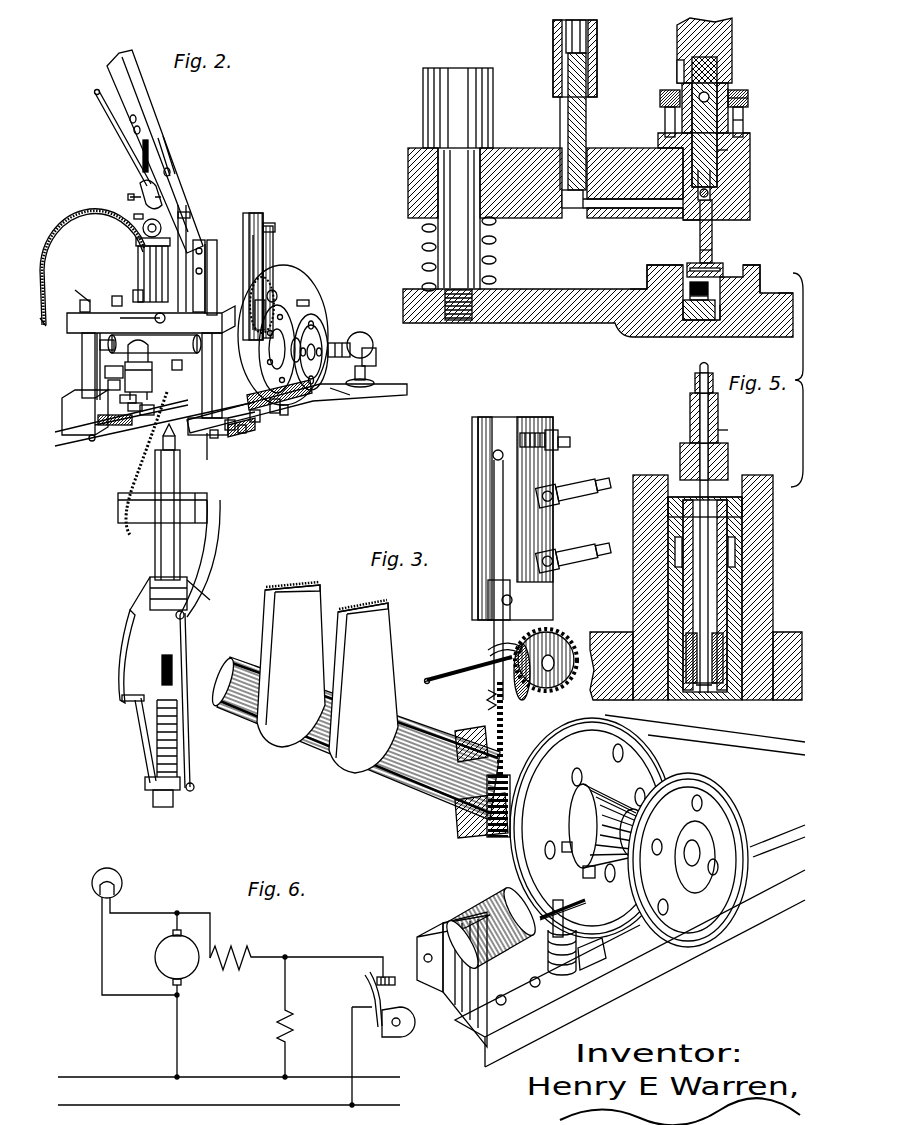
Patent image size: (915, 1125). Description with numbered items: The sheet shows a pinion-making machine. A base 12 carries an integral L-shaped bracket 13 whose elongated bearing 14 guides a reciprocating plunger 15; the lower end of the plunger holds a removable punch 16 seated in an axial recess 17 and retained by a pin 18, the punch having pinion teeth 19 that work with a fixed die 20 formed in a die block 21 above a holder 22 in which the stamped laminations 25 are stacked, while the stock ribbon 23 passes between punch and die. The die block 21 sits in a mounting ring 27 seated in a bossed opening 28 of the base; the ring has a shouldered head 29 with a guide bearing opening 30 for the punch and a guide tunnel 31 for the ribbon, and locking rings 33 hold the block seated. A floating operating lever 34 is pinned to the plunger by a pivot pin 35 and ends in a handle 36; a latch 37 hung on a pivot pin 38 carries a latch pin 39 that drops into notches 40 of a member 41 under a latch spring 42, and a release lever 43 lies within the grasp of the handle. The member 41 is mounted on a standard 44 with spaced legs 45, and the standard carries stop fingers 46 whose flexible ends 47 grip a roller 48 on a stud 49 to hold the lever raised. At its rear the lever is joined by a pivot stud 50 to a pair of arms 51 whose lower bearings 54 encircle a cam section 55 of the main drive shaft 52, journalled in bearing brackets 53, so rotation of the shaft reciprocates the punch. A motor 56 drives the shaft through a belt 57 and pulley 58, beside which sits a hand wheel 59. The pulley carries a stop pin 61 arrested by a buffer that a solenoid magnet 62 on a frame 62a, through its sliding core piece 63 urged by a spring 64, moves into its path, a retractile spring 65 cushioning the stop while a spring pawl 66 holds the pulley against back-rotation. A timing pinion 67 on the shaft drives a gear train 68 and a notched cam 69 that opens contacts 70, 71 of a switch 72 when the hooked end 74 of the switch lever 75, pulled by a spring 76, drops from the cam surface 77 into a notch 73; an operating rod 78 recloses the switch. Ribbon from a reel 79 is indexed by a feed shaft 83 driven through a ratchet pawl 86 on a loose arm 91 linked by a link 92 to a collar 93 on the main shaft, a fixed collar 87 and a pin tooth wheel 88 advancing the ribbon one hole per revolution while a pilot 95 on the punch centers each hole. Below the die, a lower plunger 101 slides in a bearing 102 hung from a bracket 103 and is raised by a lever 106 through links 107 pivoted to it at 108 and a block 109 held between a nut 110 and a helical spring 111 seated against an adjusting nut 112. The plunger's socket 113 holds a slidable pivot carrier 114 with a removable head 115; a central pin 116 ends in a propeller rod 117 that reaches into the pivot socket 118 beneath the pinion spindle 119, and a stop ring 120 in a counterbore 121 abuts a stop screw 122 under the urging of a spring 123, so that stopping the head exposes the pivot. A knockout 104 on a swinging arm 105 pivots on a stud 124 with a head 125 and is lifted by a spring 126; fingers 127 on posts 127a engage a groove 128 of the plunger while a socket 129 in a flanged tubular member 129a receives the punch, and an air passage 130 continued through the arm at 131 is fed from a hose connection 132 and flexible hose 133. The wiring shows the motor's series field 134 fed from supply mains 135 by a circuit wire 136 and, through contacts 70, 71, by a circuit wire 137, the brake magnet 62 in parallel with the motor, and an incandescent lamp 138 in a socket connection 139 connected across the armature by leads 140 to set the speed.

In FIG. 2, the base 12 is at (325, 402).
In FIG. 3, the base 12 is at (572, 1008).
In FIG. 5, the base 12 is at (578, 321).
In FIG. 2, the L-shaped bracket 13 is at (207, 276).
In FIG. 2, the bearing 14 is at (206, 262).
In FIG. 2, the plunger 15 is at (82, 335).
In FIG. 5, the plunger 15 is at (733, 40).
In FIG. 2, the punch 16 is at (118, 428).
In FIG. 5, the punch 16 is at (730, 66).
In FIG. 5, the axial recess 17 is at (680, 66).
In FIG. 5, the removable pin 18 is at (700, 100).
In FIG. 5, the pinion teeth 19 is at (720, 160).
In FIG. 5, the fixed die 20 is at (689, 265).
In FIG. 5, the die block 21 is at (757, 266).
In FIG. 5, the holder 22 is at (700, 322).
In FIG. 2, the ribbon 23 is at (127, 525).
In FIG. 5, the ribbon 23 is at (716, 272).
In FIG. 5, the laminations 25 is at (650, 282).
In FIG. 5, the mounting ring 27 is at (736, 325).
In FIG. 5, the bossed opening 28 is at (628, 289).
In FIG. 2, the shouldered head 29 is at (161, 434).
In FIG. 5, the shouldered head 29 is at (766, 272).
In FIG. 5, the guide bearing opening 30 is at (713, 263).
In FIG. 2, the guide tunnel 31 is at (142, 415).
In FIG. 5, the threaded locking rings 33 is at (690, 312).
In FIG. 2, the floating operating lever 34 is at (160, 138).
In FIG. 2, the pivot pin 35 is at (190, 215).
In FIG. 2, the handle 36 is at (107, 72).
In FIG. 2, the latch 37 is at (142, 184).
In FIG. 2, the pivot pin 38 is at (171, 171).
In FIG. 2, the latch pin 39 is at (130, 197).
In FIG. 2, the notches 40 is at (133, 296).
In FIG. 2, the latch member 41 is at (113, 300).
In FIG. 2, the latch spring 42 is at (149, 150).
In FIG. 2, the latch release lever 43 is at (117, 133).
In FIG. 2, the standard 44 is at (151, 319).
In FIG. 2, the legs 45 is at (244, 432).
In FIG. 2, the stop fingers 46 is at (140, 260).
In FIG. 2, the flexible ends 47 is at (140, 242).
In FIG. 2, the roller 48 is at (150, 224).
In FIG. 2, the stud 49 is at (144, 226).
In FIG. 2, the pivot stud 50 is at (193, 262).
In FIG. 2, the driving arms 51 is at (212, 290).
In FIG. 3, the driving arms 51 is at (352, 603).
In FIG. 2, the main drive shaft 52 is at (300, 335).
In FIG. 3, the main drive shaft 52 is at (458, 810).
In FIG. 2, the bearing brackets 53 is at (258, 425).
In FIG. 3, the bearing brackets 53 is at (490, 838).
In FIG. 2, the lower end bearings 54 is at (184, 368).
In FIG. 3, the lower end bearings 54 is at (281, 750).
In FIG. 2, the cam section 55 is at (154, 342).
In FIG. 3, the cam section 55 is at (400, 768).
In FIG. 2, the electric motor 56 is at (352, 337).
In FIG. 6, the electric motor 56 is at (193, 968).
In FIG. 2, the belt 57 is at (345, 396).
In FIG. 3, the belt 57 is at (735, 730).
In FIG. 2, the pulley 58 is at (298, 278).
In FIG. 3, the pulley 58 is at (670, 772).
In FIG. 2, the hand wheel 59 is at (314, 330).
In FIG. 3, the hand wheel 59 is at (737, 790).
In FIG. 3, the stop pin 61 is at (578, 880).
In FIG. 2, the solenoid magnet 62 is at (282, 413).
In FIG. 3, the solenoid magnet 62 is at (520, 948).
In FIG. 6, the solenoid magnet 62 is at (292, 1027).
In FIG. 2, the frame 62a is at (283, 415).
In FIG. 3, the sliding core piece 63 is at (423, 942).
In FIG. 3, the spring 64 is at (456, 1000).
In FIG. 3, the retractile spring 65 is at (582, 962).
In FIG. 3, the spring pawl 66 is at (618, 913).
In FIG. 3, the timing pinion 67 is at (545, 910).
In FIG. 2, the timing gear train 68 is at (300, 408).
In FIG. 3, the timing gear train 68 is at (487, 694).
In FIG. 2, the cylindrical notched cam 69 is at (274, 290).
In FIG. 3, the cylindrical notched cam 69 is at (556, 635).
In FIG. 2, the flexible contact 70 is at (268, 220).
In FIG. 3, the flexible contact 70 is at (482, 455).
In FIG. 6, the flexible contact 70 is at (368, 978).
In FIG. 2, the adjustable contact 71 is at (275, 227).
In FIG. 3, the adjustable contact 71 is at (537, 432).
In FIG. 6, the adjustable contact 71 is at (388, 976).
In FIG. 2, the switch 72 is at (249, 222).
In FIG. 3, the switch 72 is at (478, 494).
In FIG. 3, the notches 73 is at (566, 646).
In FIG. 3, the hooked end 74 is at (484, 672).
In FIG. 6, the hooked end 74 is at (370, 1020).
In FIG. 2, the switch lever 75 is at (265, 258).
In FIG. 3, the switch lever 75 is at (488, 606).
In FIG. 2, the spring 76 is at (250, 238).
In FIG. 3, the spring 76 is at (493, 518).
In FIG. 3, the cam surface 77 is at (500, 645).
In FIG. 2, the operating rod 78 is at (150, 318).
In FIG. 3, the operating rod 78 is at (438, 676).
In FIG. 2, the ribbon feed reel 79 is at (277, 293).
In FIG. 2, the ribbon feed shaft 83 is at (230, 430).
In FIG. 2, the ratchet pawl 86 is at (104, 370).
In FIG. 2, the fixed collar 87 is at (149, 377).
In FIG. 2, the pin tooth wheel 88 is at (216, 440).
In FIG. 2, the loose arm 91 is at (100, 360).
In FIG. 2, the link 92 is at (126, 355).
In FIG. 2, the driving collar 93 is at (82, 314).
In FIG. 5, the pilot 95 is at (750, 190).
In FIG. 5, the lower plunger 101 is at (760, 565).
In FIG. 2, the elongated bearing 102 is at (158, 540).
In FIG. 5, the elongated bearing 102 is at (640, 578).
In FIG. 2, the depending bracket 103 is at (210, 511).
In FIG. 5, the depending bracket 103 is at (606, 638).
In FIG. 2, the knockout 104 is at (126, 408).
In FIG. 5, the knockout 104 is at (650, 236).
In FIG. 2, the swinging arm 105 is at (118, 399).
In FIG. 5, the swinging arm 105 is at (546, 205).
In FIG. 2, the lever 106 is at (118, 680).
In FIG. 2, the connecting links 107 is at (138, 732).
In FIG. 2, the pivotal connection 108 is at (185, 615).
In FIG. 2, the block 109 is at (152, 792).
In FIG. 2, the nut 110 is at (160, 807).
In FIG. 2, the helical spring 111 is at (165, 753).
In FIG. 2, the adjusting nut 112 is at (174, 690).
In FIG. 5, the socket 113 is at (728, 622).
In FIG. 2, the pivot carrier 114 is at (160, 452).
In FIG. 5, the pivot carrier 114 is at (729, 462).
In FIG. 2, the shouldered head 115 is at (210, 460).
In FIG. 5, the shouldered head 115 is at (690, 410).
In FIG. 5, the central pin 116 is at (722, 590).
In FIG. 5, the pivot propeller rod 117 is at (709, 415).
In FIG. 5, the pivot socket 118 is at (719, 436).
In FIG. 5, the pinion pivot shaft 119 is at (695, 383).
In FIG. 5, the stop ring 120 is at (735, 530).
In FIG. 5, the counterbore 121 is at (732, 550).
In FIG. 5, the stop screw 122 is at (740, 506).
In FIG. 5, the helical spring 123 is at (724, 652).
In FIG. 5, the pivot stud 124 is at (450, 168).
In FIG. 5, the head 125 is at (428, 110).
In FIG. 2, the helical spring 126 is at (90, 440).
In FIG. 5, the helical spring 126 is at (422, 230).
In FIG. 2, the fingers 127 is at (107, 383).
In FIG. 5, the fingers 127 is at (665, 92).
In FIG. 5, the posts 127a is at (750, 104).
In FIG. 5, the groove 128 is at (745, 118).
In FIG. 5, the socket 129 is at (710, 174).
In FIG. 5, the flanged tubular member 129a is at (752, 138).
In FIG. 5, the air passage 130 is at (700, 231).
In FIG. 5, the air passage 131 is at (598, 190).
In FIG. 2, the hose inlet connection 132 is at (80, 293).
In FIG. 5, the hose inlet connection 132 is at (562, 118).
In FIG. 2, the flexible hose 133 is at (58, 236).
In FIG. 5, the flexible hose 133 is at (598, 36).
In FIG. 6, the series field 134 is at (249, 955).
In FIG. 6, the D. C. supply mains 135 is at (93, 1077).
In FIG. 6, the circuit wire 136 is at (180, 1053).
In FIG. 2, the circuit wire 137 is at (305, 300).
In FIG. 3, the circuit wire 137 is at (583, 482).
In FIG. 6, the circuit wire 137 is at (346, 957).
In FIG. 2, the incandescent lamp 138 is at (376, 344).
In FIG. 6, the incandescent lamp 138 is at (94, 889).
In FIG. 2, the socket connection 139 is at (372, 382).
In FIG. 6, the leads 140 is at (124, 998).